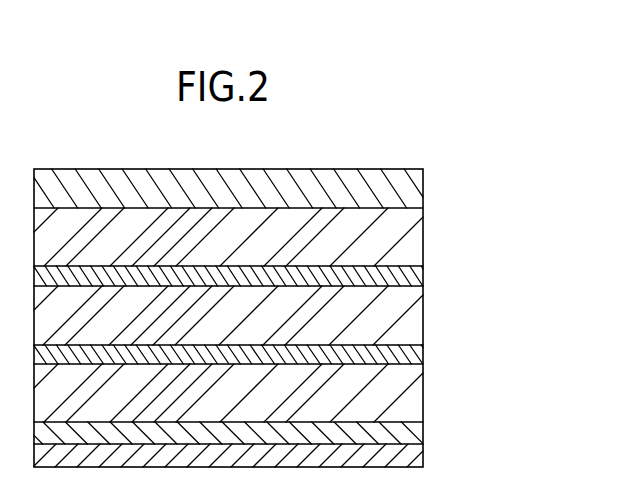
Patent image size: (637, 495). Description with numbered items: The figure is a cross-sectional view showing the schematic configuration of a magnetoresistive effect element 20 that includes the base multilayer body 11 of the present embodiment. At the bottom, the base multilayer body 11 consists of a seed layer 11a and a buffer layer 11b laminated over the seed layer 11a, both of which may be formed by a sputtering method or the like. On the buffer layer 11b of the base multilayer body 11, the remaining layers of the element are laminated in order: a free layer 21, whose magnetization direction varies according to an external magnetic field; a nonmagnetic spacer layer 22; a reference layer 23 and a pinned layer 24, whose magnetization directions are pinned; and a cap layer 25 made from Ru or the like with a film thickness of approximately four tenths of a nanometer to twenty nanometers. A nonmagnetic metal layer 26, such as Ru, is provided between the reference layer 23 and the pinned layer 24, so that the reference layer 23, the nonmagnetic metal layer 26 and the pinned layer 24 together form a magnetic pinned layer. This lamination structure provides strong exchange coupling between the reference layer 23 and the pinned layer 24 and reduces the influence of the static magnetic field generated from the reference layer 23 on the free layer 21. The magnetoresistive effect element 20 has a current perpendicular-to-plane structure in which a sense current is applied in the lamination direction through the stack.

The magnetoresistive effect element 20 is at (401, 155).
The cap layer 25 is at (423, 188).
The pinned layer 24 is at (417, 232).
The nonmagnetic metal layer 26 is at (420, 276).
The reference layer 23 is at (423, 308).
The nonmagnetic spacer layer 22 is at (423, 355).
The free layer 21 is at (423, 391).
The base multilayer body 11 is at (287, 446).
The buffer layer 11b is at (423, 427).
The seed layer 11a is at (423, 464).